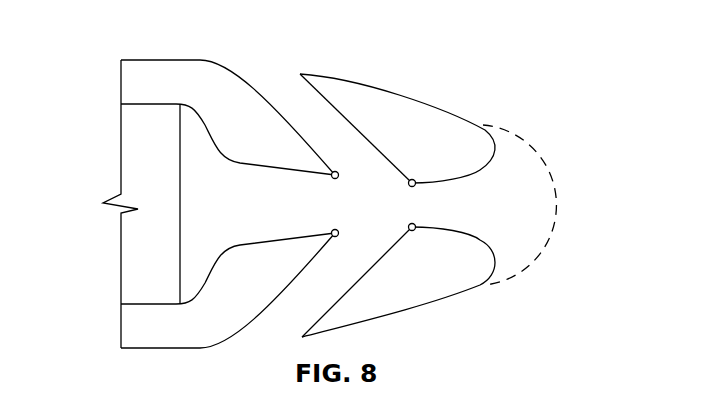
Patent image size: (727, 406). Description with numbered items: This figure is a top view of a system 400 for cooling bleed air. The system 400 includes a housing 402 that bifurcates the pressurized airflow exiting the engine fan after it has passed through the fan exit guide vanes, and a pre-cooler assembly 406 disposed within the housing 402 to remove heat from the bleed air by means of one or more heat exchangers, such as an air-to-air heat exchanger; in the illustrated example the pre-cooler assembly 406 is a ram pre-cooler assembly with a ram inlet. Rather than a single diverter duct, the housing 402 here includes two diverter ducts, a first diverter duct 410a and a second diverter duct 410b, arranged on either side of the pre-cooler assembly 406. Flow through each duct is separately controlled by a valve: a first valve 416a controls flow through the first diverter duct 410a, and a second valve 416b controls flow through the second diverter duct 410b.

The system 400 is at (135, 43).
The housing 402 is at (374, 78).
The pre-cooler assembly 406 is at (173, 179).
The first diverter duct 410a is at (335, 276).
The second diverter duct 410b is at (289, 107).
The first valve 416a is at (413, 230).
The second valve 416b is at (390, 185).